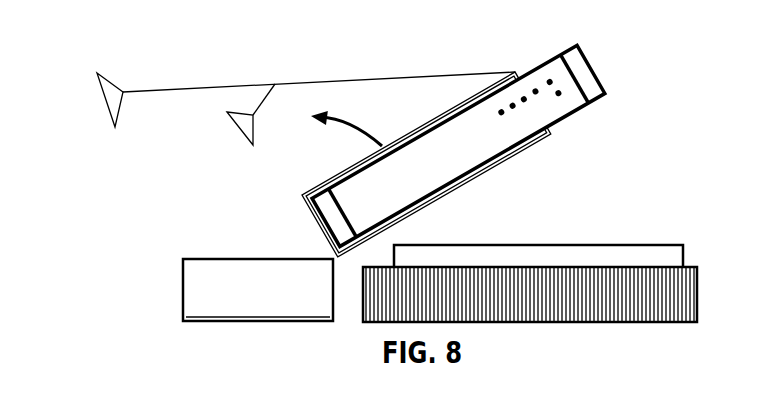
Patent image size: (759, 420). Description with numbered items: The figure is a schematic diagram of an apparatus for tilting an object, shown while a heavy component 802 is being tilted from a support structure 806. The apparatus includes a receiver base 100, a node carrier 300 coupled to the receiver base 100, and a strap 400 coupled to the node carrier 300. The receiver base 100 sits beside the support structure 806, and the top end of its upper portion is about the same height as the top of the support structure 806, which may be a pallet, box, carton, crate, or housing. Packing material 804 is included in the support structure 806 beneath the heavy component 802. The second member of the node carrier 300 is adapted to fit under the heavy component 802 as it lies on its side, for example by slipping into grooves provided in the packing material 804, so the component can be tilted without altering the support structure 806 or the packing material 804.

The receiver base 100 is at (199, 243).
The node carrier 300 is at (502, 167).
The strap 400 is at (335, 73).
The heavy component 802 is at (571, 102).
The packing material 804 is at (633, 258).
The support structure 806 is at (673, 298).